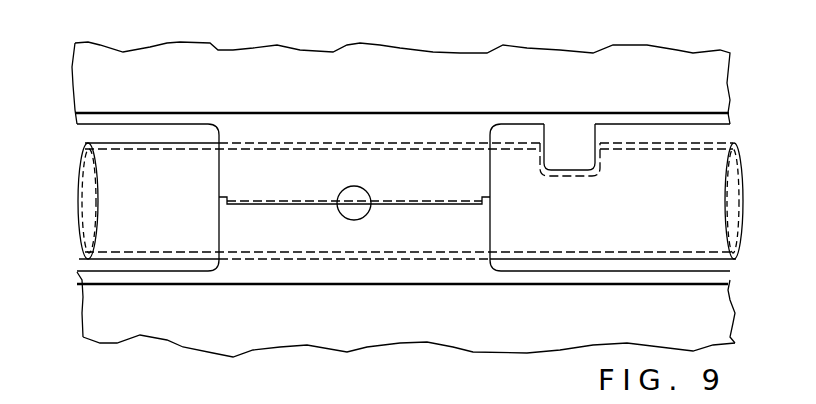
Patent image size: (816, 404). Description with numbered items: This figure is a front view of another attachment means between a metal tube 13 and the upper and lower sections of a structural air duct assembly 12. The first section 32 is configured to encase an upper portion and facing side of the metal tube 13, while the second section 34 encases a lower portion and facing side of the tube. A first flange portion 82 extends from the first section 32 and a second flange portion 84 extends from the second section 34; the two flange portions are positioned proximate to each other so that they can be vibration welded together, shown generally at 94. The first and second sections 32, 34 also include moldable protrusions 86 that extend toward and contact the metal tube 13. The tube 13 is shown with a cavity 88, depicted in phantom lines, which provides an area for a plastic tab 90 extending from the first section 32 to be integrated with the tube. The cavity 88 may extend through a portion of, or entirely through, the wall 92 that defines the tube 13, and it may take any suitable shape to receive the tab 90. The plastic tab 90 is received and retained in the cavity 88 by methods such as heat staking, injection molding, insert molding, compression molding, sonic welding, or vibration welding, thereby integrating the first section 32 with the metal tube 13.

The structural air duct assembly 12 is at (178, 351).
The metal tube 13 is at (636, 172).
The first section 32 is at (73, 87).
The second section 34 is at (735, 313).
The first flange portion 82 is at (218, 165).
The second flange portion 84 is at (490, 230).
The moldable protrusions 86 is at (218, 265).
The cavity 88 is at (540, 167).
The plastic tab 90 is at (566, 150).
The wall 92 is at (683, 147).
The vibration welding 94 is at (354, 187).